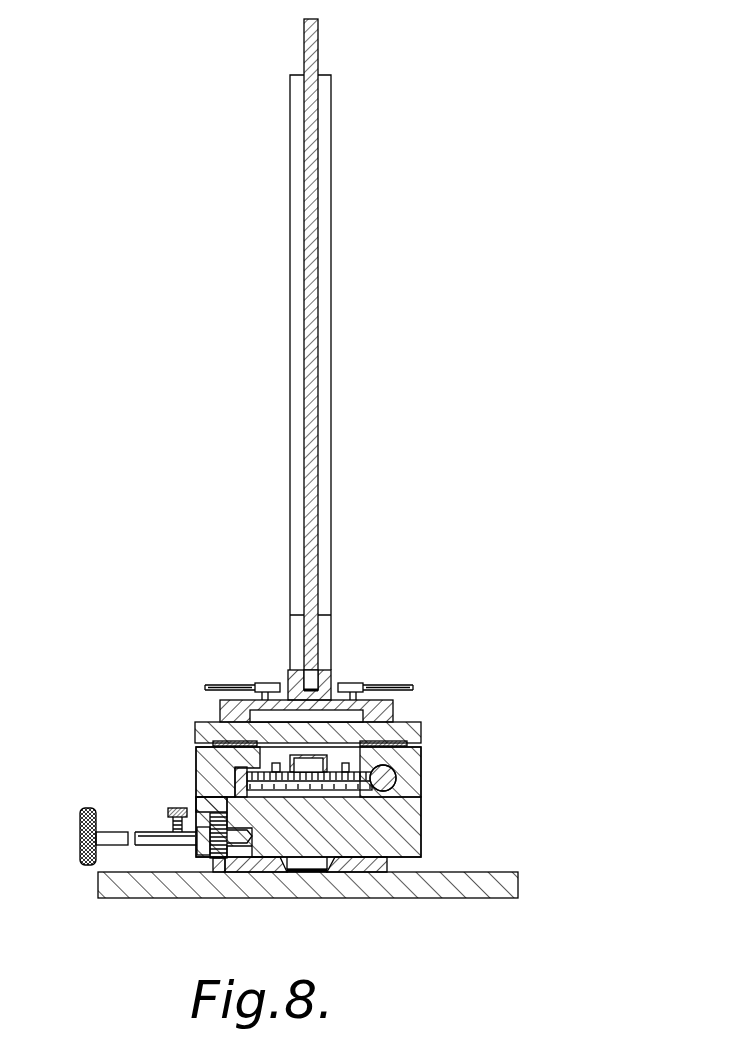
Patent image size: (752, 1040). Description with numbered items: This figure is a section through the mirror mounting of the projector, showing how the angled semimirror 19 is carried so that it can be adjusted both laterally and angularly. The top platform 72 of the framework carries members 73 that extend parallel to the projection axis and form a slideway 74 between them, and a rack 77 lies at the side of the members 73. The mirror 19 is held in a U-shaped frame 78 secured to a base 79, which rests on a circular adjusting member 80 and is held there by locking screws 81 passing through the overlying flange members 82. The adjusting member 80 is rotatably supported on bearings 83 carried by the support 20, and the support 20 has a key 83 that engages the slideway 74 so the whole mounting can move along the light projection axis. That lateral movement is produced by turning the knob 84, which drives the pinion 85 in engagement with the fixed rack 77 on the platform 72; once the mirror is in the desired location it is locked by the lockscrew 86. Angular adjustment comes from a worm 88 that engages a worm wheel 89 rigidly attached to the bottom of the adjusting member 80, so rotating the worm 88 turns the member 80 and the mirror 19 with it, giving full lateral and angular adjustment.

The angled semimirror 19 is at (312, 190).
The U-shaped frame 78 is at (328, 273).
The base 79 is at (265, 712).
The locking screws 81 is at (355, 692).
The flange members 82 is at (394, 706).
The bearings / key 83 is at (223, 742).
The circular adjusting member 80 is at (422, 730).
The pinion 85 is at (217, 798).
The lockscrew 86 is at (177, 807).
The knob 84 is at (80, 821).
The worm 88 is at (385, 778).
The worm wheel 89 is at (349, 788).
The support 20 is at (410, 838).
The members 73 is at (405, 863).
The slideway 74 is at (287, 872).
The rack 77 is at (222, 872).
The top platform 72 is at (110, 887).